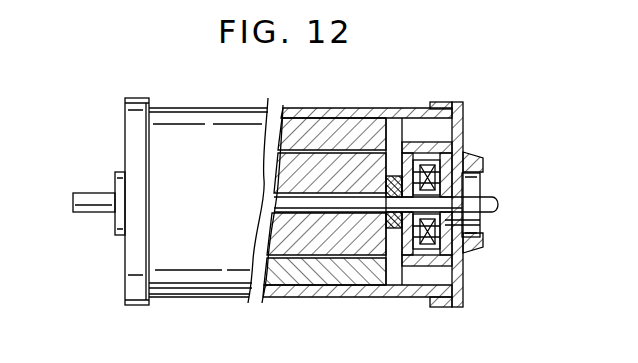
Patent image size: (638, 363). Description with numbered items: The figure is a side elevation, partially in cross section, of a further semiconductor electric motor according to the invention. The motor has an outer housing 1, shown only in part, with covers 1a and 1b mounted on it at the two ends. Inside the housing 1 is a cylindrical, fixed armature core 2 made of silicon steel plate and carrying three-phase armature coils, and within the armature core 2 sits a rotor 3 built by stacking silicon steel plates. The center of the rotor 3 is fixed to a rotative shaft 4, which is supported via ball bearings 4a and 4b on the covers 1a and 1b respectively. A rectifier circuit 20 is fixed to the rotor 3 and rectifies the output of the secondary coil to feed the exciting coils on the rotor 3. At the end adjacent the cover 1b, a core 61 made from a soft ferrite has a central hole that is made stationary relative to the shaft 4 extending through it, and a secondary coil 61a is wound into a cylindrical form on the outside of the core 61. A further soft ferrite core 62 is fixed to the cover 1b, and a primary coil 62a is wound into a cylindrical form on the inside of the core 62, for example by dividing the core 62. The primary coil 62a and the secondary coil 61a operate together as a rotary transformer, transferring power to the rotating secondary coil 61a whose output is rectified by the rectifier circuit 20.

The outer housing 1 is at (195, 108).
The cover 1a is at (143, 98).
The cover 1b is at (456, 102).
The armature core 2 is at (335, 130).
The rotor 3 is at (300, 157).
The rotative shaft 4 is at (76, 212).
The ball bearing 4a is at (118, 172).
The ball bearing 4b is at (472, 183).
The rectifier circuit 20 is at (392, 170).
The core 61 is at (478, 221).
The secondary coil 61a is at (478, 234).
The core 62 is at (463, 250).
The primary coil 62a is at (425, 245).